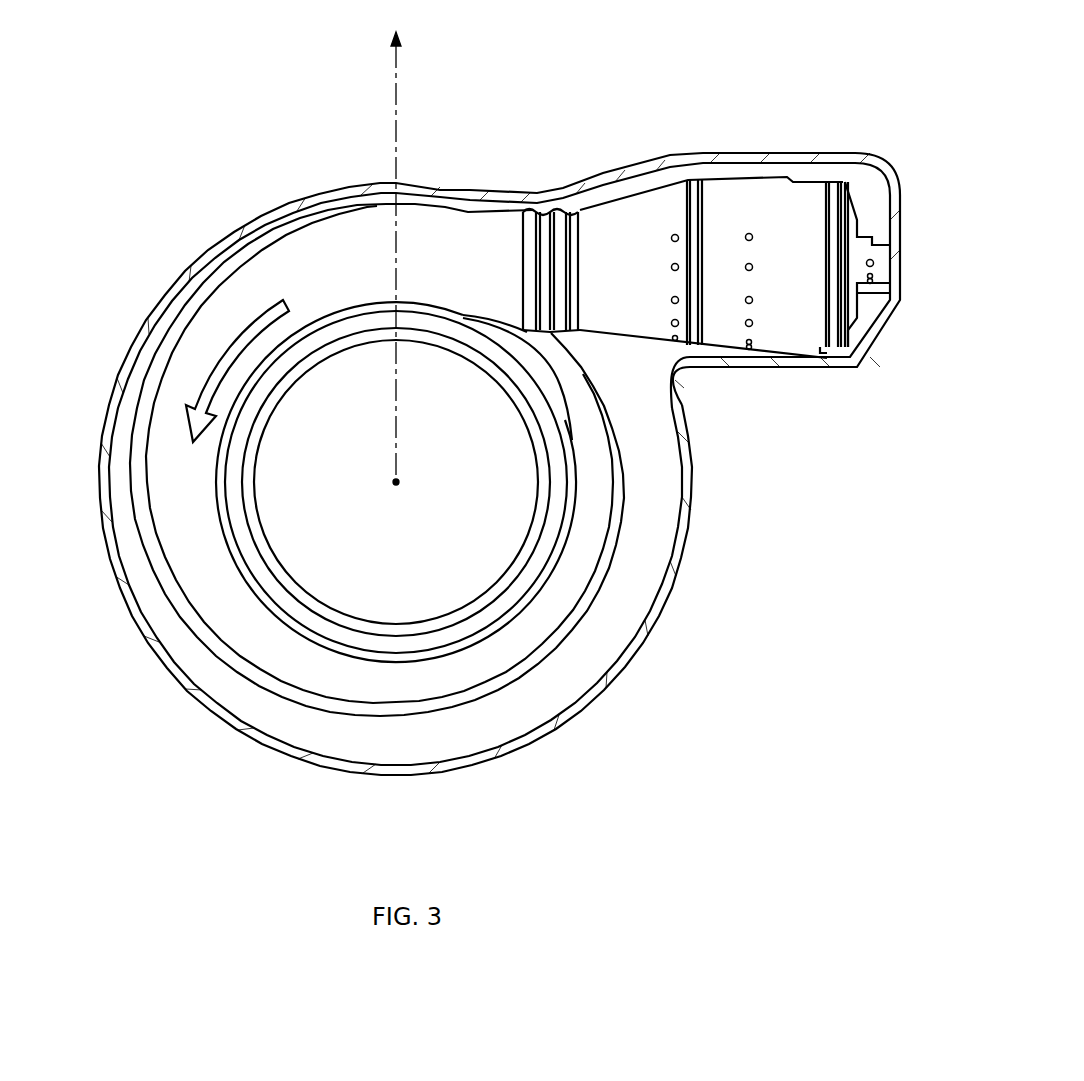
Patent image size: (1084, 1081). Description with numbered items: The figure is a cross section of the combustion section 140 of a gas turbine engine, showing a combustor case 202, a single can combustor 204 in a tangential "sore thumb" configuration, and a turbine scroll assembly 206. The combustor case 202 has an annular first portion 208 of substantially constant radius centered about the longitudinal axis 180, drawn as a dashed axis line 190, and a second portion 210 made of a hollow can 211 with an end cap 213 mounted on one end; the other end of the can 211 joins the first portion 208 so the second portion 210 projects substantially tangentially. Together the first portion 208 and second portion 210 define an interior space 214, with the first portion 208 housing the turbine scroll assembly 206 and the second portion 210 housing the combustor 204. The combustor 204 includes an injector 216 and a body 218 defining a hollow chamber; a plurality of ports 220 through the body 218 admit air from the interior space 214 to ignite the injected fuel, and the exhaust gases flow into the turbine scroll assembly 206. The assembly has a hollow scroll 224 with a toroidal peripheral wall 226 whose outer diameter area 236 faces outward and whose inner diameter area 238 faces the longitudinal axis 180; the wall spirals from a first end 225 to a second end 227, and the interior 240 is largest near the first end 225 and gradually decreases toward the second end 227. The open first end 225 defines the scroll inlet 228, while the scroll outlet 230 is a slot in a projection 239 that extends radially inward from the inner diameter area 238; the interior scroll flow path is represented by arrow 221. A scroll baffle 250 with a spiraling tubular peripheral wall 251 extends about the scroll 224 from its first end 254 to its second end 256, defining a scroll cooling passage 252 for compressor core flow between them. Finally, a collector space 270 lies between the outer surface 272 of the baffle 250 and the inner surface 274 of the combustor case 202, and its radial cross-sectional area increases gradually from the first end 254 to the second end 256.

The combustion section 140 is at (168, 70).
The longitudinal axis 180 is at (398, 484).
The axis line 190 is at (399, 73).
The combustor case 202 is at (255, 210).
The combustor 204 is at (728, 195).
The turbine scroll assembly 206 is at (225, 662).
The first portion 208 is at (338, 190).
The second portion 210 is at (757, 135).
The can 211 is at (818, 152).
The end cap 213 is at (880, 180).
The interior space 214 is at (478, 745).
The injector 216 is at (888, 265).
The body 218 is at (752, 290).
The ports 220 is at (671, 238).
The arrow 221 is at (182, 360).
The scroll 224 is at (370, 620).
The first end 225 is at (537, 212).
The peripheral wall 226 is at (195, 488).
The second end 227 is at (540, 343).
The scroll inlet 228 is at (497, 260).
The scroll outlet 230 is at (483, 367).
The outer diameter area 236 is at (410, 195).
The inner diameter area 238 is at (318, 366).
The projection 239 is at (287, 388).
The interior 240 is at (362, 284).
The scroll baffle 250 is at (300, 712).
The peripheral wall 251 is at (172, 622).
The scroll cooling passage 252 is at (132, 485).
The first end 254 is at (548, 195).
The second end 256 is at (585, 366).
The collector space 270 is at (570, 690).
The outer surface 272 is at (383, 720).
The inner surface 274 is at (425, 762).